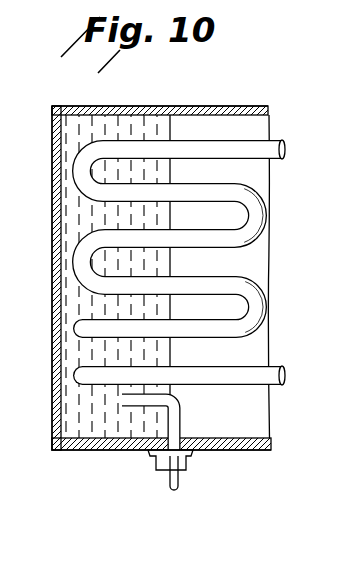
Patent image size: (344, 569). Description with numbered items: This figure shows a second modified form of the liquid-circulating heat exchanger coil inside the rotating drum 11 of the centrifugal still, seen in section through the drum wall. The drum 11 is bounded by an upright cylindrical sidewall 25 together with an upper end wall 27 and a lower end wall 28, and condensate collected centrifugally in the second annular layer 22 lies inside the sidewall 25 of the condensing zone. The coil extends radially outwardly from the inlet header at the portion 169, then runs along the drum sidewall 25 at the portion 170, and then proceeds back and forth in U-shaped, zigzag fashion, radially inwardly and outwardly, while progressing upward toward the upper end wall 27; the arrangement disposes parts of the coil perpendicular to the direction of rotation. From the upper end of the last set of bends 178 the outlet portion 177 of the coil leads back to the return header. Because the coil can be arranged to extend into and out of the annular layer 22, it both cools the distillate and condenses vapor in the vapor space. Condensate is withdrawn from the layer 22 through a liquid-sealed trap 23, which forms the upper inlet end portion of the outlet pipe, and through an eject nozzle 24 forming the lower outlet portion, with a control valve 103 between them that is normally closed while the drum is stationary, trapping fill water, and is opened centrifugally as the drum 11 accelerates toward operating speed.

The drum 11 is at (48, 99).
The upper end wall 27 is at (149, 107).
The outlet portion of the coil 177 is at (276, 141).
The last set of bends 178 is at (193, 198).
The second annular layer 22 is at (66, 281).
The cylindrical sidewall 25 is at (56, 321).
The coil portion along the drum sidewall 170 is at (95, 376).
The radially outward coil portion 169 is at (276, 364).
The liquid-sealed trap 23 is at (183, 416).
The lower end wall 28 is at (227, 441).
The control valve 103 is at (150, 455).
The eject nozzle 24 is at (170, 479).